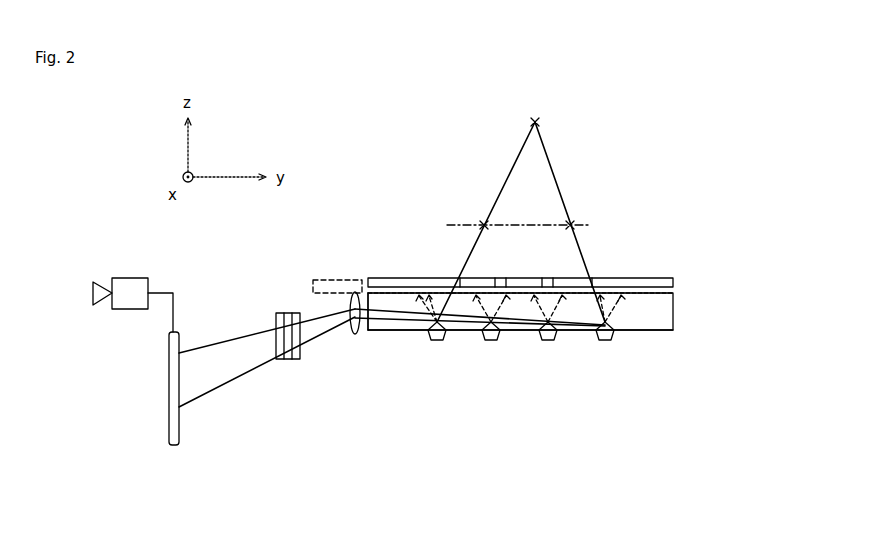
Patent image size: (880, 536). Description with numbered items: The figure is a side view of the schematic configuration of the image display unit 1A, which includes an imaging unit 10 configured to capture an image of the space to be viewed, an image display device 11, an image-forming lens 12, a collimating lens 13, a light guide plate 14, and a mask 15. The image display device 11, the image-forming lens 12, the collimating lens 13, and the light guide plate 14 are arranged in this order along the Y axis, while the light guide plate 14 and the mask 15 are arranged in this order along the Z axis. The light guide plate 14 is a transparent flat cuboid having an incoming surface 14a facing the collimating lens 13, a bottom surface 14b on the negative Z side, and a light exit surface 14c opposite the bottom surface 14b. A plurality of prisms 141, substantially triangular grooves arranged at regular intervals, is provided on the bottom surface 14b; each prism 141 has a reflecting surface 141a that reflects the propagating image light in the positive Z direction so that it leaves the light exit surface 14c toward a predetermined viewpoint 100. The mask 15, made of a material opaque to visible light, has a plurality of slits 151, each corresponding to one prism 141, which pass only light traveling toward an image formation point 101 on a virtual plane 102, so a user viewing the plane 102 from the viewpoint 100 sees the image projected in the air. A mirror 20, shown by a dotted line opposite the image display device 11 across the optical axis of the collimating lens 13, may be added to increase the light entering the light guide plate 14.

The image display unit 1A is at (600, 440).
The imaging unit 10 is at (130, 278).
The image display device 11 is at (173, 445).
The image-forming lens 12 is at (290, 359).
The collimating lens 13 is at (357, 334).
The light guide plate 14 is at (642, 323).
The incoming surface 14a is at (365, 328).
The bottom surface 14b is at (660, 330).
The light exit surface 14c is at (673, 290).
The mask 15 is at (657, 278).
The mirror 20 is at (313, 283).
The viewpoint 100 is at (530, 122).
The image formation point 101 is at (483, 224).
The plane 102 is at (595, 225).
The prism 141 is at (440, 340).
The reflecting surface 141a is at (433, 340).
The slit 151 is at (452, 278).